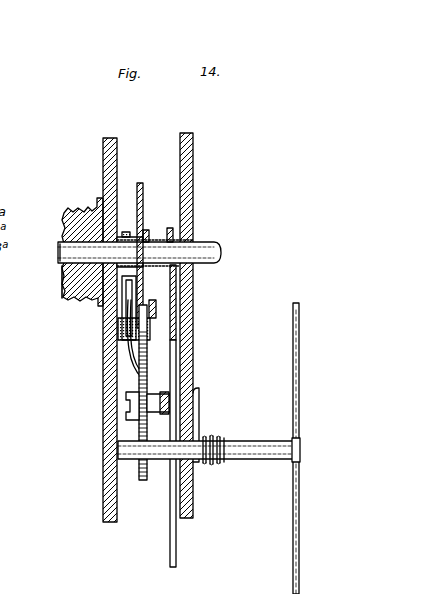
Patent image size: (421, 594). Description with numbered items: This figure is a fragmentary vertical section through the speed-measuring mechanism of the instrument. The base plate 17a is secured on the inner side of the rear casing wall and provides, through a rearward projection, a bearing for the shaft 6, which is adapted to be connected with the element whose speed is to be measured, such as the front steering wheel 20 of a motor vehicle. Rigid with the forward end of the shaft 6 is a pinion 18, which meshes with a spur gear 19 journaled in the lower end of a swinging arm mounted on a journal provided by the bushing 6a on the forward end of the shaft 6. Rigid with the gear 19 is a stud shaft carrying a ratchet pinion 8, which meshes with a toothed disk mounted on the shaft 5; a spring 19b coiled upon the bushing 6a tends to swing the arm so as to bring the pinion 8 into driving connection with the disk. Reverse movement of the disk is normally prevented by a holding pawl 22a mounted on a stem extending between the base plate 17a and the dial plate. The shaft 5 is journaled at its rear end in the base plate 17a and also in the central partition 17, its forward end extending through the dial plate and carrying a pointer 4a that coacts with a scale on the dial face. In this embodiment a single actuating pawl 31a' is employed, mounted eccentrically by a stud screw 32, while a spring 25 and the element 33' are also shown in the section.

The pointer 4a is at (293, 381).
The shaft 5 is at (256, 442).
The shaft 6 is at (201, 246).
The bushing 6a is at (100, 313).
The ratchet pinion 8 is at (167, 387).
The central partition 17 is at (193, 155).
The base plate 17a is at (117, 152).
The pinion 18 is at (141, 183).
The spur gear 19 is at (143, 425).
The spring 19b is at (130, 355).
The front steering wheel 20 is at (137, 383).
The holding pawl 22a is at (148, 240).
The spring 25 is at (222, 440).
The actuating pawl 31a' is at (172, 308).
The stud screw 32 is at (156, 310).
The hub 33' is at (47, 282).